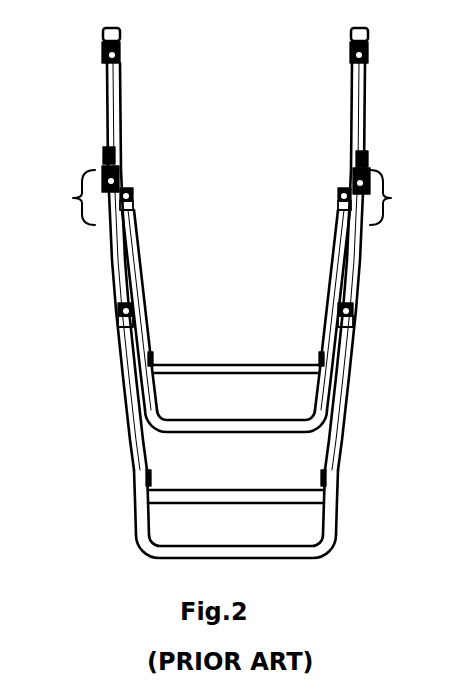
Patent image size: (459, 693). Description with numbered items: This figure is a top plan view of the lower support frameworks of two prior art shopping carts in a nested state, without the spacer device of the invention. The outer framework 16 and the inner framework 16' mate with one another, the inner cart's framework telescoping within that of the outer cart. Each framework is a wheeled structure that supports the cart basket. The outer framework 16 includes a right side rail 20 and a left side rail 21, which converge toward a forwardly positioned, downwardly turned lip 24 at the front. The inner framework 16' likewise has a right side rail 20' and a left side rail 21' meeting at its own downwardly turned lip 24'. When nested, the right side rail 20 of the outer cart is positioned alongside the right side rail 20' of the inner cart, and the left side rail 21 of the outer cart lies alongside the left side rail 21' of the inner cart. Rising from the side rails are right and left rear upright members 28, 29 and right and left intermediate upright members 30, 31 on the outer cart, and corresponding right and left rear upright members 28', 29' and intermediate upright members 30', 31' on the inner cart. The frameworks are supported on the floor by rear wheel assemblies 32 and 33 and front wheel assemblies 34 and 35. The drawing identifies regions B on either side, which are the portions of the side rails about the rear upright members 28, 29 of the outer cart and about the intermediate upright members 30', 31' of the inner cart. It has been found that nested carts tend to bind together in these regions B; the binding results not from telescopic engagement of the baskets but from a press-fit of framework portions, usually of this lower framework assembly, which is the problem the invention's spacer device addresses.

The wheeled framework 16 is at (237, 332).
The inner framework 16' is at (226, 321).
The right side rail 20 is at (97, 266).
The left side rail 21 is at (368, 266).
The right side rail 20' is at (104, 310).
The left side rail 21' is at (309, 310).
The downwardly turned lip 24 is at (244, 568).
The downwardly turned lip 24' is at (272, 403).
The right rear upright member 28 is at (146, 171).
The left rear upright member 29 is at (321, 175).
The right rear upright member 28' is at (148, 47).
The left rear upright member 29' is at (321, 47).
The right intermediate upright member 30 is at (162, 310).
The left intermediate upright member 31 is at (383, 323).
The right intermediate upright member 30' is at (162, 196).
The left intermediate upright member 31' is at (314, 199).
The rear wheel assembly 32 is at (105, 156).
The rear wheel assembly 33 is at (365, 158).
The front wheel assembly 34 is at (136, 512).
The front wheel assembly 35 is at (334, 514).
The binding regions B is at (229, 197).